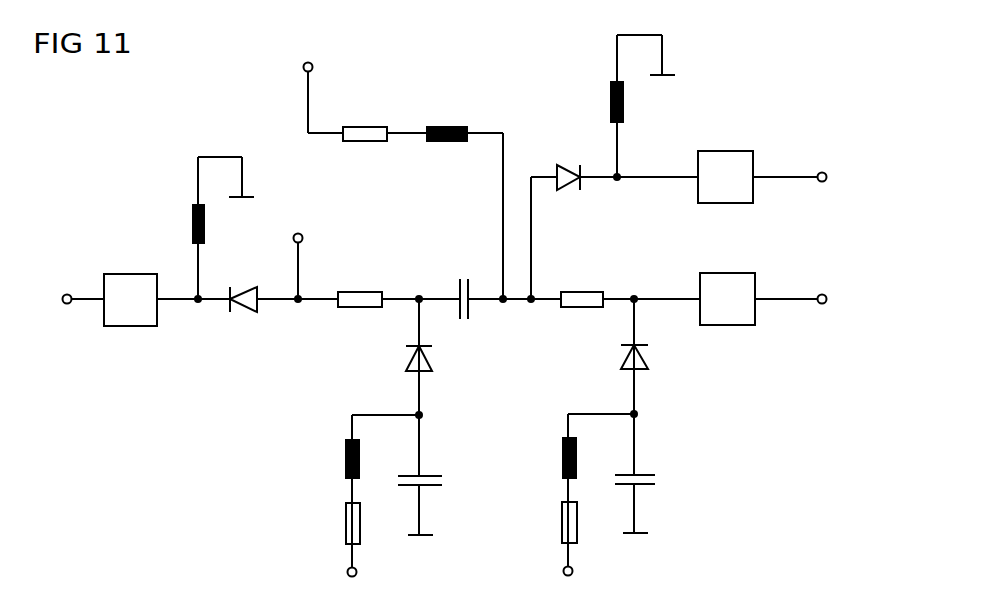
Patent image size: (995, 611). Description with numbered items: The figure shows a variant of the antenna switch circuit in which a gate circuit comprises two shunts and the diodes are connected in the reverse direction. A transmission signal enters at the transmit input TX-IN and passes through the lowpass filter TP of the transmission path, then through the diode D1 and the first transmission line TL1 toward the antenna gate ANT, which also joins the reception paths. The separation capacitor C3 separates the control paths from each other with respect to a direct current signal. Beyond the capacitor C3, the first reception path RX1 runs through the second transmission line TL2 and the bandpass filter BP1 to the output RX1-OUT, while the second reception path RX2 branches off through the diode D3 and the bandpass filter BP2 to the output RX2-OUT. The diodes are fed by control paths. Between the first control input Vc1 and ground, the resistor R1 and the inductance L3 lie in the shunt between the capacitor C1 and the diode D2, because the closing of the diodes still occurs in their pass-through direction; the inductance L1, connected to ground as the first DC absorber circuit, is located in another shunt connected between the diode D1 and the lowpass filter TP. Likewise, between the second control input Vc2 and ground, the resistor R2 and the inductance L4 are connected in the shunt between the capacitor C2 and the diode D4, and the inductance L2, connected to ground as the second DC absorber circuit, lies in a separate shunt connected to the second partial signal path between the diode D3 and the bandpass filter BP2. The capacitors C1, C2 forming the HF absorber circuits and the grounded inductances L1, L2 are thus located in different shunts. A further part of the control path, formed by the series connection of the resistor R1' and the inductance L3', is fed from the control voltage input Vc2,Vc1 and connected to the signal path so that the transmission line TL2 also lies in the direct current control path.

The transmit input terminal TX-IN is at (66, 293).
The lowpass filter TP is at (131, 327).
The inductance L1 is at (193, 226).
The diode D1 is at (244, 312).
The antenna gate ANT is at (297, 232).
The first transmission line TL1 is at (360, 290).
The separation capacitor C3 is at (465, 276).
The control voltage input Vc2,Vc1 is at (305, 51).
The resistor R1' is at (367, 104).
The inductance L3' is at (448, 104).
The inductance L2 is at (611, 102).
The diode D3 is at (568, 191).
The second receive path RX2 is at (652, 175).
The bandpass filter BP2 is at (727, 150).
The output RX2-OUT is at (823, 171).
The first receive path RX1 is at (549, 296).
The second transmission line TL2 is at (583, 309).
The diode D2 is at (434, 359).
The diode D4 is at (647, 357).
The bandpass filter BP1 is at (728, 327).
The output RX1-OUT is at (823, 293).
The inductance L3 is at (318, 458).
The resistor R1 is at (322, 523).
The first control input Vc1 is at (354, 590).
The capacitor C1 is at (430, 474).
The inductance L4 is at (563, 460).
The resistor R2 is at (562, 525).
The second control input Vc2 is at (572, 588).
The capacitor C2 is at (657, 480).